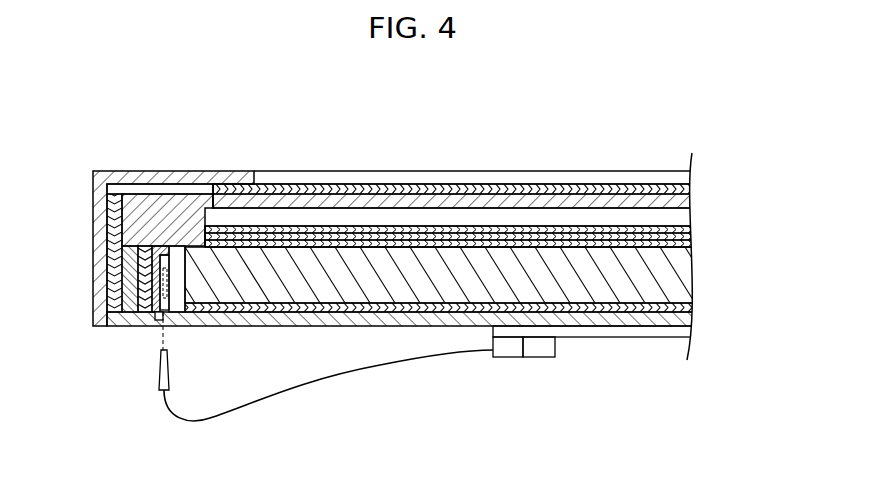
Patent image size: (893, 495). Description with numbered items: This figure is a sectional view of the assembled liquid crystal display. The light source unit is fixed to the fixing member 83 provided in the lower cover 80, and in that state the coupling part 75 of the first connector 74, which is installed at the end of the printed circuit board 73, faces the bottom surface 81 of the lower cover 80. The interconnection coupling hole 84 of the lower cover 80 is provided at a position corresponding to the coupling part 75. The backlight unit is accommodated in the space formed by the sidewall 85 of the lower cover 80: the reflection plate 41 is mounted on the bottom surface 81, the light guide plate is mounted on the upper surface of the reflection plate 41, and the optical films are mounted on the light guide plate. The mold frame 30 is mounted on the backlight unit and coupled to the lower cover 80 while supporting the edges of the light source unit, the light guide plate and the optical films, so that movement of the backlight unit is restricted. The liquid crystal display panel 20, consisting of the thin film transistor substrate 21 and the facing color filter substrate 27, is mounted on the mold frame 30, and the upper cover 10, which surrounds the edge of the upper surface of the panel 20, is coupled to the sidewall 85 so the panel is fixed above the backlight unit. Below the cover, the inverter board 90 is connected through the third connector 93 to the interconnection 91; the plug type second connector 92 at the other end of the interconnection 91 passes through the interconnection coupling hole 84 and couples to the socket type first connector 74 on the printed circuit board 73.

The upper cover 10 is at (118, 177).
The liquid crystal display panel 20 is at (458, 147).
The thin film transistor substrate 21 is at (586, 190).
The color filter substrate 27 is at (630, 200).
The mold frame 30 is at (132, 228).
The reflection plate 41 is at (649, 318).
The printed circuit board 73 is at (147, 297).
The first connector 74 is at (162, 253).
The coupling part 75 is at (172, 320).
The lower cover 80 is at (120, 324).
The bottom surface 81 is at (283, 308).
The fixing member 83 is at (143, 262).
The interconnection coupling hole 84 is at (157, 327).
The sidewall 85 is at (110, 210).
The inverter board 90 is at (596, 338).
The interconnection 91 is at (370, 372).
The second connector 92 is at (157, 387).
The third connector 93 is at (507, 358).